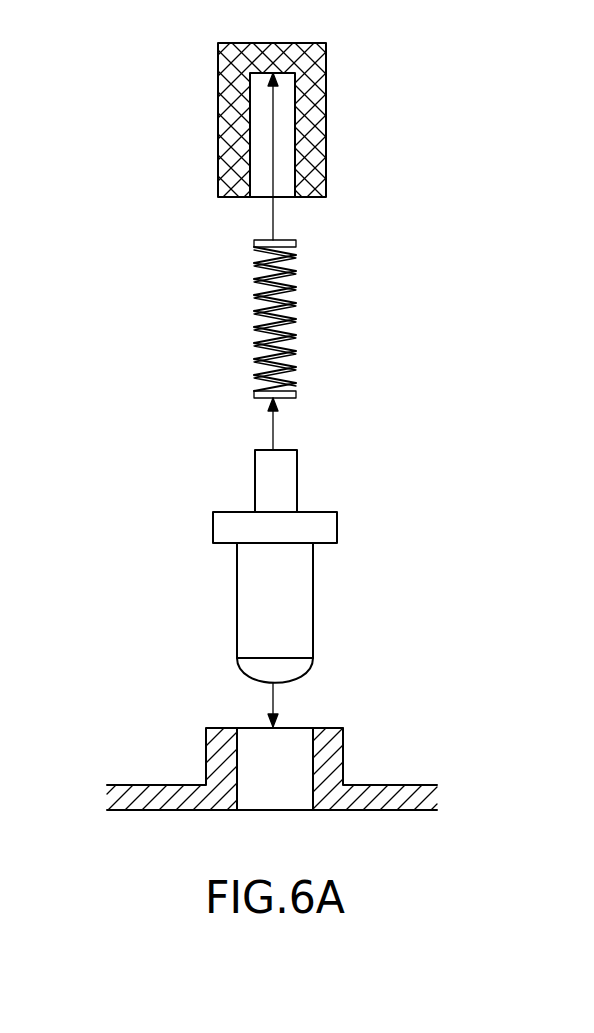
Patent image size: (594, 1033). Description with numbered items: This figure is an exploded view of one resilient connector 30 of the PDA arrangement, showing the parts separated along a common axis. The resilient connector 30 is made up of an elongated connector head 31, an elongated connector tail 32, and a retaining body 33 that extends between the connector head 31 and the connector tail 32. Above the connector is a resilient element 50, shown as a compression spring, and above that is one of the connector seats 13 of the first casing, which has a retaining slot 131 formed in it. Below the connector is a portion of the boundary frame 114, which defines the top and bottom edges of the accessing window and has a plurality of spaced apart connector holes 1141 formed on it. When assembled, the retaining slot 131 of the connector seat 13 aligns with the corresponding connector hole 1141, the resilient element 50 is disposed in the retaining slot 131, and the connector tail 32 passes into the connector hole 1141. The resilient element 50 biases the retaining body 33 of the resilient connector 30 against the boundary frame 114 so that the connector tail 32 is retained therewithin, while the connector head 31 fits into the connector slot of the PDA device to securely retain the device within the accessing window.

The connector seat 13 is at (335, 90).
The retaining slot 131 is at (300, 171).
The resilient element 50 is at (320, 277).
The resilient connector 30 is at (301, 555).
The connector head 31 is at (303, 623).
The connector tail 32 is at (288, 487).
The retaining body 33 is at (318, 525).
The boundary frame 114 is at (345, 736).
The connector hole 1141 is at (318, 783).